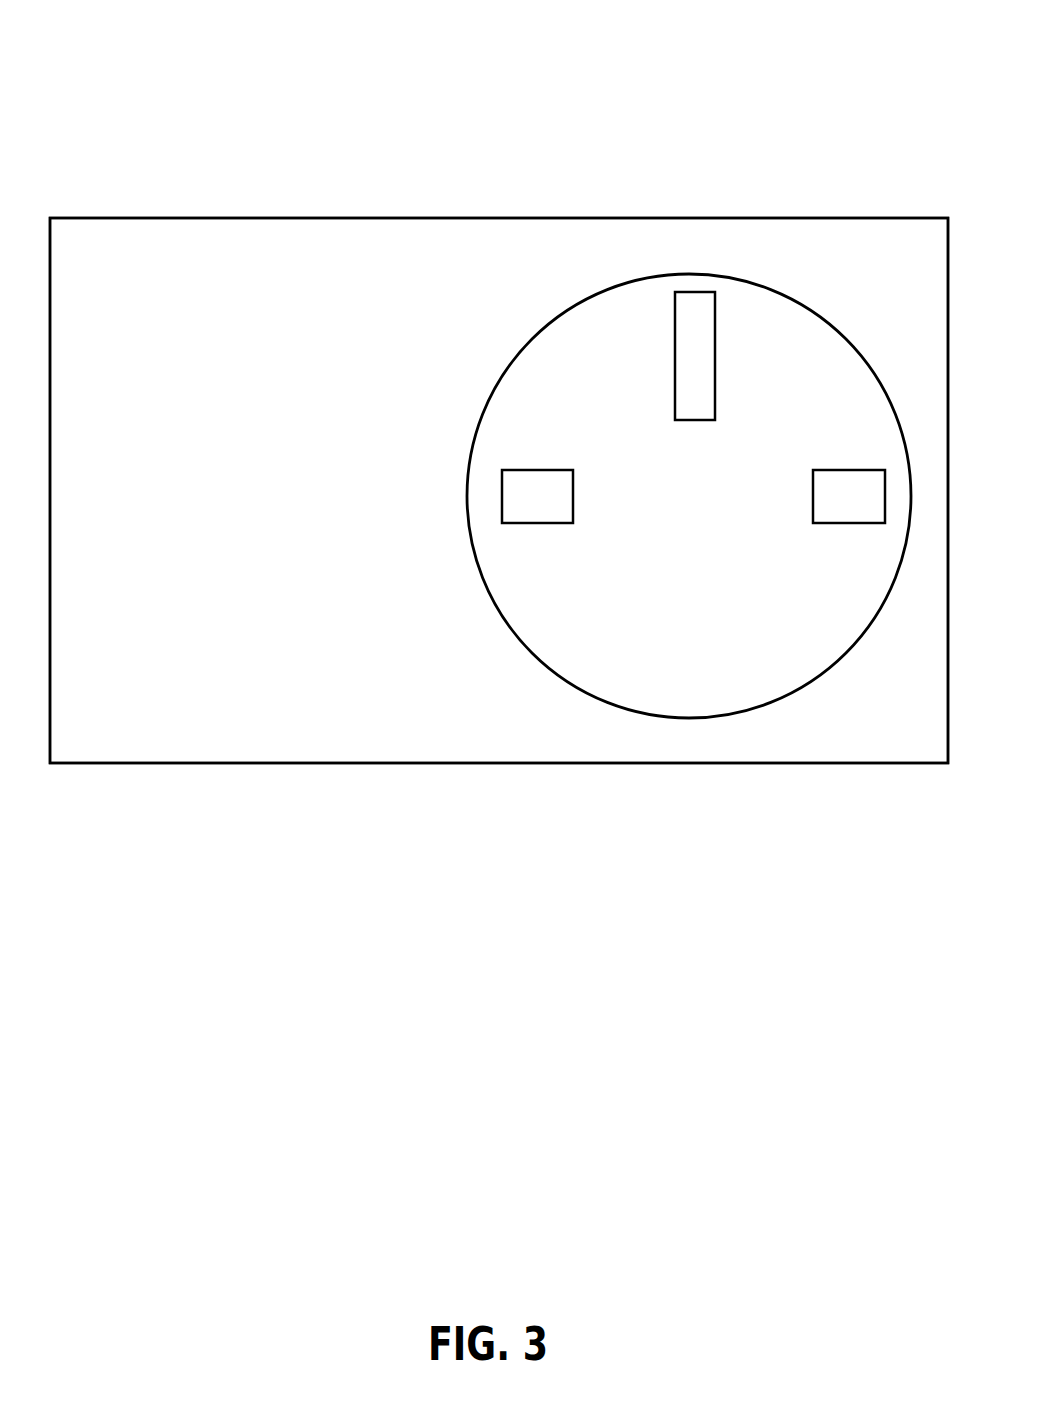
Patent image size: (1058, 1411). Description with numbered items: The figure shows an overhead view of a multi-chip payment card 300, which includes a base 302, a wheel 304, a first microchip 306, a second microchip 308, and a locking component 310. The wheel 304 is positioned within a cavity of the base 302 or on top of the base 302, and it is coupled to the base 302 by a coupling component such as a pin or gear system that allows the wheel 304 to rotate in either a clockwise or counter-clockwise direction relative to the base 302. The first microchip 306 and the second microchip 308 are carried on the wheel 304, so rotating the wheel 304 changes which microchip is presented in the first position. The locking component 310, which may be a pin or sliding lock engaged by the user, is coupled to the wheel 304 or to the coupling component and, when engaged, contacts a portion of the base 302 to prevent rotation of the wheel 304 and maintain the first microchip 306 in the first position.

The multi-chip payment card 300 is at (909, 48).
The base 302 is at (337, 245).
The wheel 304 is at (512, 405).
The first microchip 306 is at (833, 525).
The second microchip 308 is at (560, 525).
The locking component 310 is at (690, 420).